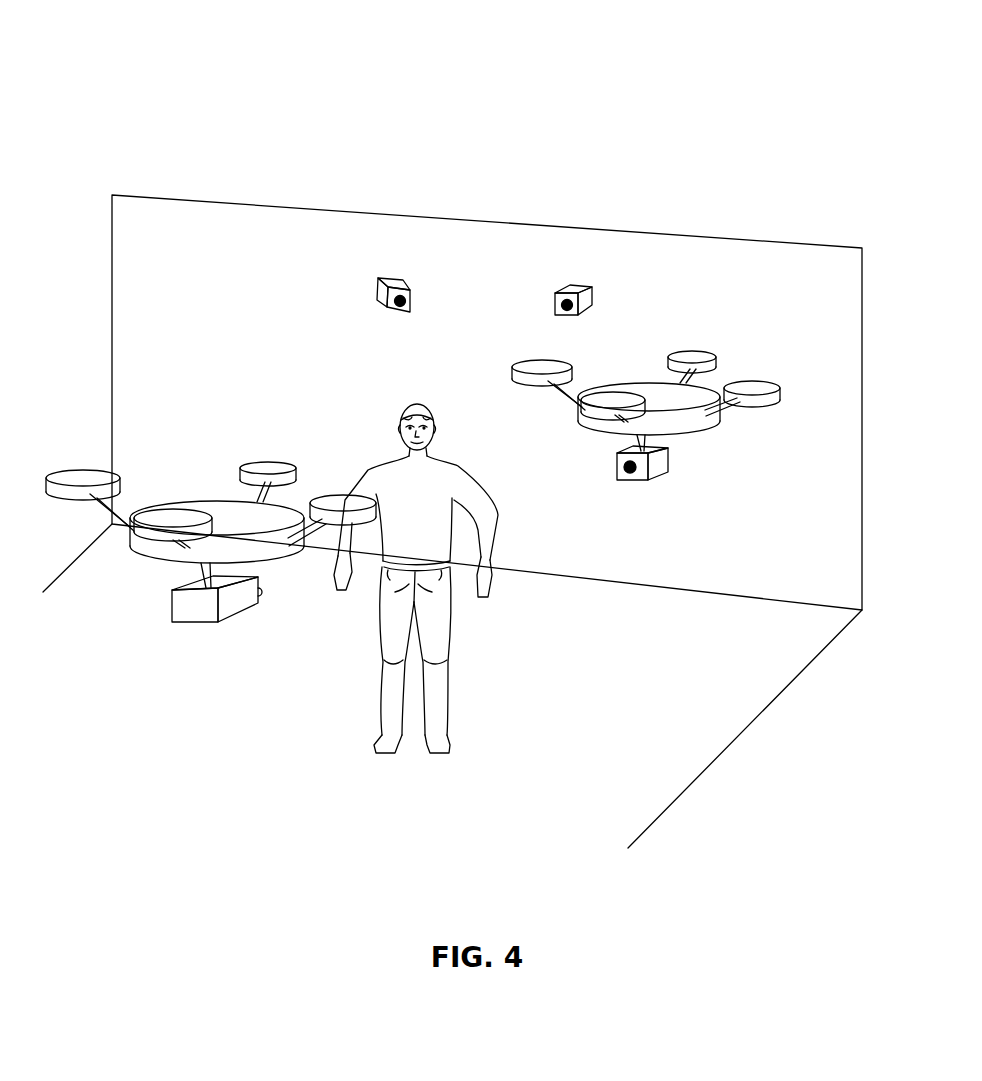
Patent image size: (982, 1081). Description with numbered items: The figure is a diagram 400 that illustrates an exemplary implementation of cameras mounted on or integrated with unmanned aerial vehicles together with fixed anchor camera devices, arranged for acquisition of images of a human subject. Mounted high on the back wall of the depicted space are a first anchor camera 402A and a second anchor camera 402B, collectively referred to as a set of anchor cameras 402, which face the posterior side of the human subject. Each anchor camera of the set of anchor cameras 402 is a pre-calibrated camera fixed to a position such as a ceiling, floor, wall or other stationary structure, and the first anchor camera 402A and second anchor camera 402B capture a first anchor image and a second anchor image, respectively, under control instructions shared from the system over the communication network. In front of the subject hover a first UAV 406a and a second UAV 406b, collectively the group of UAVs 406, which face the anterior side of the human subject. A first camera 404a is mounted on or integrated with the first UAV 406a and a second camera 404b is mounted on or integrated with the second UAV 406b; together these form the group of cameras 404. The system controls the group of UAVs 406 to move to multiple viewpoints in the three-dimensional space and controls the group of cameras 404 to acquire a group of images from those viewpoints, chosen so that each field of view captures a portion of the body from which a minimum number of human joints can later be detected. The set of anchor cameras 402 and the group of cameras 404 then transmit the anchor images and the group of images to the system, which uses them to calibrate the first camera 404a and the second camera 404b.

The diagram 400 is at (822, 64).
The set of anchor cameras 402 is at (484, 217).
The first anchor camera 402A is at (393, 281).
The second anchor camera 402B is at (573, 283).
The group of cameras 404 is at (420, 671).
The first camera 404a is at (202, 612).
The second camera 404b is at (633, 477).
The group of UAVs 406 is at (413, 305).
The first UAV 406a is at (203, 502).
The second UAV 406b is at (642, 367).